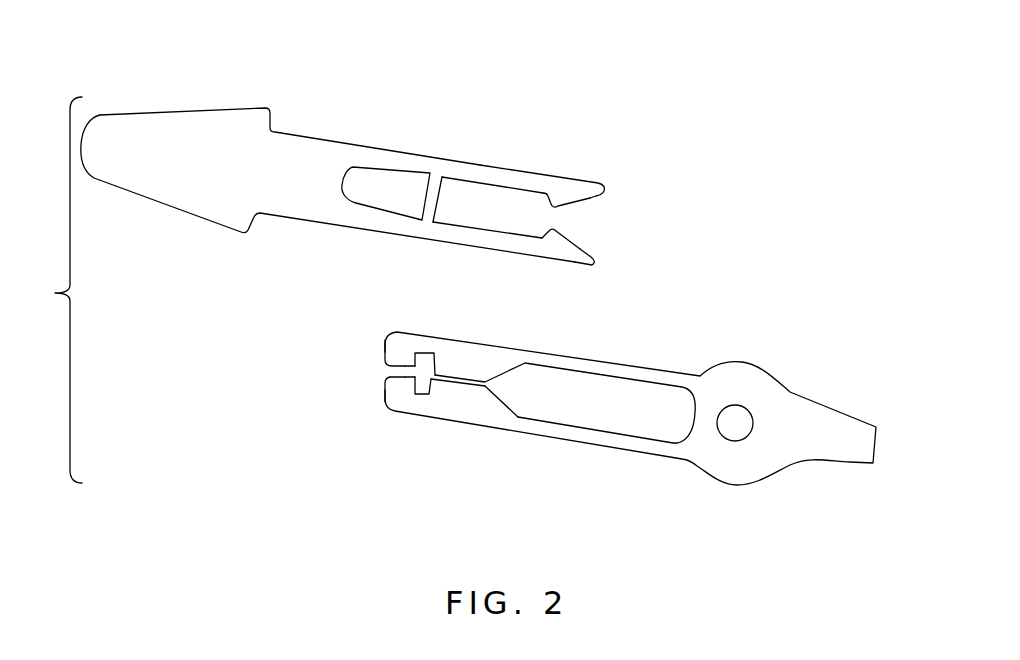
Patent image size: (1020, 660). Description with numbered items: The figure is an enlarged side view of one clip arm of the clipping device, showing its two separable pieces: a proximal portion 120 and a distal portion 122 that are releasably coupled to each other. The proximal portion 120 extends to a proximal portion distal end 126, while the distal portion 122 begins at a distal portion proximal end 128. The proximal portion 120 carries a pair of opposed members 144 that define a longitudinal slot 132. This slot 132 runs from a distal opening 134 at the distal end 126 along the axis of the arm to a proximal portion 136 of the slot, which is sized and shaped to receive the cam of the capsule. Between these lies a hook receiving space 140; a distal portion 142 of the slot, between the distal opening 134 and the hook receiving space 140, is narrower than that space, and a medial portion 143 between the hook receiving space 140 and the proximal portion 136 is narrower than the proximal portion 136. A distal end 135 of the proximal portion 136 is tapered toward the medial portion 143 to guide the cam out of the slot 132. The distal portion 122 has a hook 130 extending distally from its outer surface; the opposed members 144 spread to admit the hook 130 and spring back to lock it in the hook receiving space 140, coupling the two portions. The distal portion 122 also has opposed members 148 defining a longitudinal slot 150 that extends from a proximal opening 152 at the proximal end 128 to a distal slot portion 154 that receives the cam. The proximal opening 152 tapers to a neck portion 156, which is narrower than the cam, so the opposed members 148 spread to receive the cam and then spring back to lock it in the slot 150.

The proximal portion 120 is at (745, 377).
The distal portion 122 is at (217, 133).
The proximal portion distal end 126 is at (396, 346).
The distal portion proximal end 128 is at (605, 190).
The hook 130 is at (427, 203).
The longitudinal slot 132 is at (437, 388).
The distal opening 134 is at (410, 378).
The distal end of the proximal portion of the slot 135 is at (483, 382).
The proximal portion of the slot 136 is at (590, 402).
The hook receiving space 140 is at (420, 370).
The distal portion of the slot 142 is at (412, 392).
The medial portion of the slot 143 is at (453, 382).
The opposed members 144 is at (385, 397).
The opposed members 148 is at (597, 253).
The longitudinal slot 150 is at (477, 202).
The proximal opening 152 is at (593, 222).
The distal slot portion 154 is at (450, 190).
The neck portion 156 is at (552, 229).